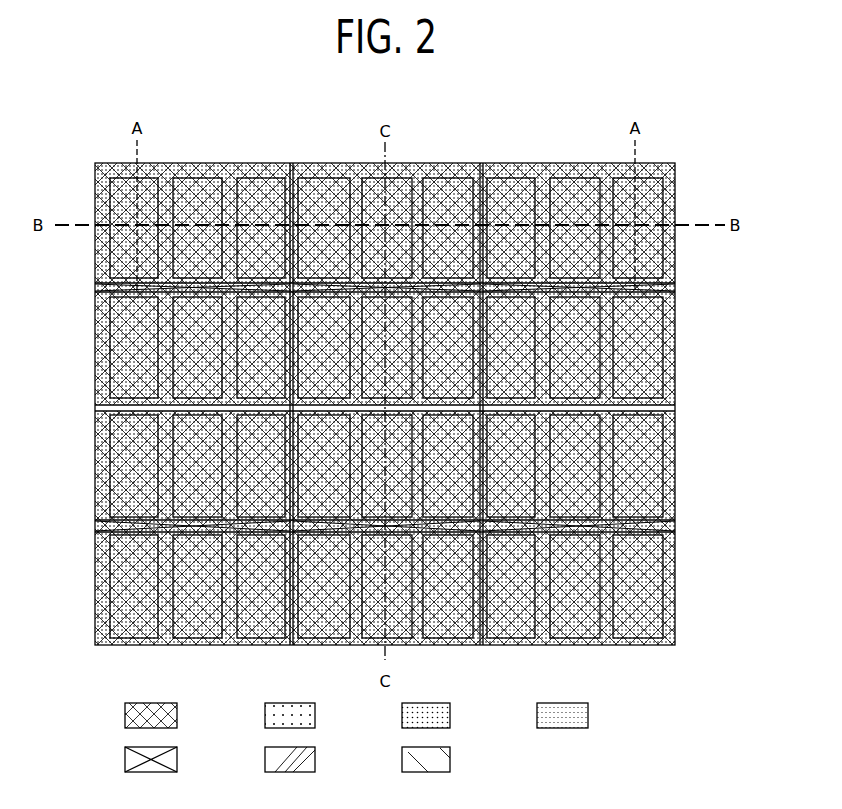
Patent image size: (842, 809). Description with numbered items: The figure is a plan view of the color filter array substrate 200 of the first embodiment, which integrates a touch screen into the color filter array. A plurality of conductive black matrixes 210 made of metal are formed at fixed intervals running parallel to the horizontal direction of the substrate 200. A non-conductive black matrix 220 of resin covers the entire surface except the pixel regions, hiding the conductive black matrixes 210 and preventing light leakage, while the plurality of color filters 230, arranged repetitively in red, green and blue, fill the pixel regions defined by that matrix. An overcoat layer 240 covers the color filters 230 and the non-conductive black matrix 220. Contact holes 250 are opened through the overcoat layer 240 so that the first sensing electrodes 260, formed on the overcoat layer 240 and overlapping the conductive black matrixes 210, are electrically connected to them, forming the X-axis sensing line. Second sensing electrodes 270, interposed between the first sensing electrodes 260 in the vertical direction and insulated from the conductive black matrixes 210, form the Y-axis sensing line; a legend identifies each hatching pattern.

The color filter array substrate 200 is at (675, 163).
The conductive black matrix 210 is at (179, 716).
The non-conductive black matrix 220 is at (319, 716).
The color filter 230 is at (455, 716).
The overcoat layer 240 is at (591, 716).
The contact hole 250 is at (179, 760).
The first sensing electrode 260 is at (319, 760).
The second sensing electrode 270 is at (455, 760).